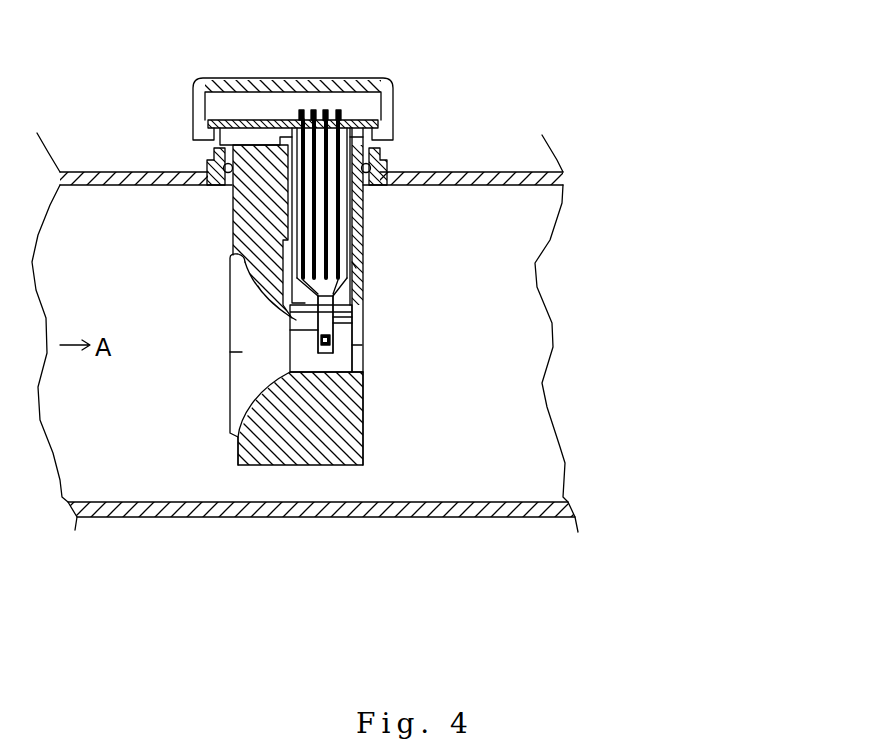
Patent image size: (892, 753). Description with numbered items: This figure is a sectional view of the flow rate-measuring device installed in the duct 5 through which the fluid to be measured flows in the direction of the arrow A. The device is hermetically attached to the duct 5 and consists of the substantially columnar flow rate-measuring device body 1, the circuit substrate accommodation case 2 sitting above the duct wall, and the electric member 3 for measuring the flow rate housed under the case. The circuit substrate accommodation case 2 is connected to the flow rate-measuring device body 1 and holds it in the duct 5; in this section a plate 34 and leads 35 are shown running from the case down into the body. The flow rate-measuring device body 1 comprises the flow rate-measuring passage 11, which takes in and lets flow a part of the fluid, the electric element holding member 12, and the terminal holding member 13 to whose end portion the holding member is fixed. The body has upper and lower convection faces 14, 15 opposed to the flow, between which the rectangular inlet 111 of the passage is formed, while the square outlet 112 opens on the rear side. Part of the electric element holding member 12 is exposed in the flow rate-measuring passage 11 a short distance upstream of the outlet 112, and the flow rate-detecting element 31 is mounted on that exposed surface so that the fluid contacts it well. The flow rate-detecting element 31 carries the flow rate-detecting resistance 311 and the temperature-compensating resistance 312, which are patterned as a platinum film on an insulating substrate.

The flow rate-measuring device body 1 is at (354, 449).
The circuit substrate accommodation case 2 is at (370, 80).
The electric member 3 is at (258, 118).
The duct 5 is at (118, 516).
The flow rate-measuring passage 11 is at (243, 300).
The electric element holding member 12 is at (306, 342).
The terminal holding member 13 is at (352, 265).
The upper convection face 14 is at (233, 207).
The lower convection face 15 is at (238, 445).
The flow rate-detecting element 31 is at (350, 323).
The terminal plate 34 is at (284, 124).
The lead wires 35 is at (343, 212).
The inlet 111 is at (230, 353).
The outlet 112 is at (354, 347).
The flow rate-detecting resistance 311 is at (336, 322).
The temperature-compensating resistance 312 is at (356, 388).